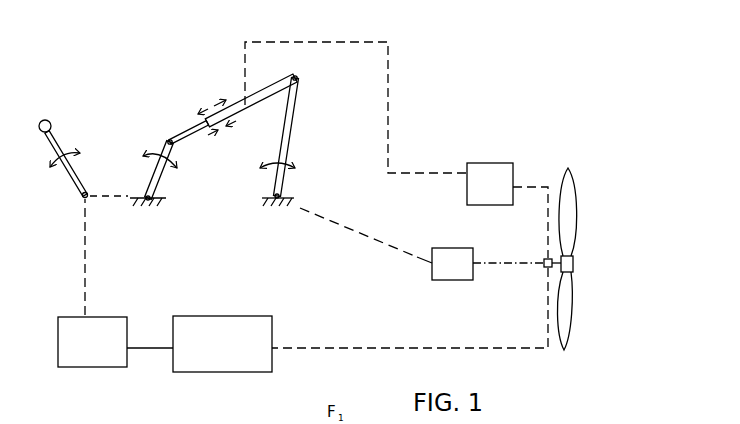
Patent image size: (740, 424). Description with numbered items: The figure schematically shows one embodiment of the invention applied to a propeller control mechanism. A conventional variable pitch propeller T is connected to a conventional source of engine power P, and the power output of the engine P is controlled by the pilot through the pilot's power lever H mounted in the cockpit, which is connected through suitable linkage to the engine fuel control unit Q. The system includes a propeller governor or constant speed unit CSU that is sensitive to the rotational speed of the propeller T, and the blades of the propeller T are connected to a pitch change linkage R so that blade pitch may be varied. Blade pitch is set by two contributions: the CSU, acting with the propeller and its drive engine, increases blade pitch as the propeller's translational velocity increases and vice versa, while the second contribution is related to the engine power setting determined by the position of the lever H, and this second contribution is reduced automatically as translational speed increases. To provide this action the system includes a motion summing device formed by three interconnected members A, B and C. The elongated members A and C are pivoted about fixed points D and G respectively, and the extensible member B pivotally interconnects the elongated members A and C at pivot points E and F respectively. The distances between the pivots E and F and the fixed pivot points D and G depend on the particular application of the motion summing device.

The pilot's power lever H is at (64, 148).
The elongated member A is at (158, 178).
The extensible member B is at (212, 115).
The elongated member C is at (286, 150).
The fixed pivot point D is at (148, 214).
The pivot point E is at (160, 138).
The pivot point F is at (306, 82).
The fixed pivot point G is at (278, 212).
The constant speed unit CSU is at (508, 196).
The pitch change linkage R is at (461, 275).
The variable pitch propeller T is at (569, 290).
The engine fuel control unit Q is at (101, 354).
The source of engine power P is at (229, 354).